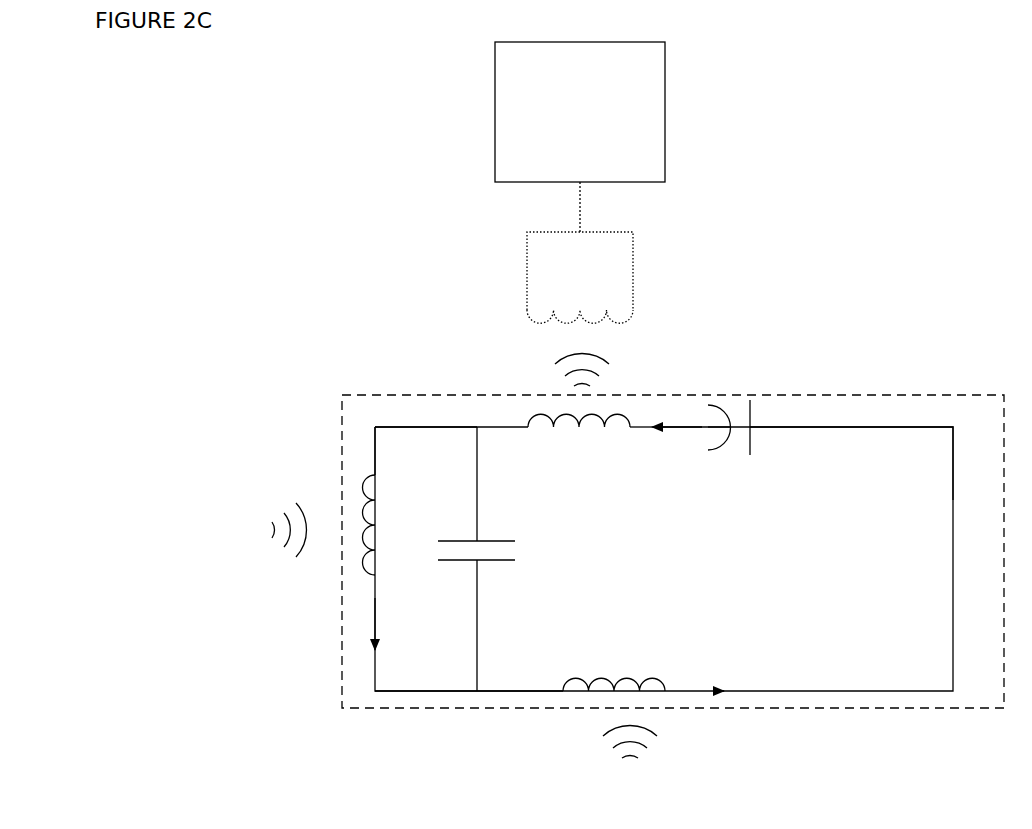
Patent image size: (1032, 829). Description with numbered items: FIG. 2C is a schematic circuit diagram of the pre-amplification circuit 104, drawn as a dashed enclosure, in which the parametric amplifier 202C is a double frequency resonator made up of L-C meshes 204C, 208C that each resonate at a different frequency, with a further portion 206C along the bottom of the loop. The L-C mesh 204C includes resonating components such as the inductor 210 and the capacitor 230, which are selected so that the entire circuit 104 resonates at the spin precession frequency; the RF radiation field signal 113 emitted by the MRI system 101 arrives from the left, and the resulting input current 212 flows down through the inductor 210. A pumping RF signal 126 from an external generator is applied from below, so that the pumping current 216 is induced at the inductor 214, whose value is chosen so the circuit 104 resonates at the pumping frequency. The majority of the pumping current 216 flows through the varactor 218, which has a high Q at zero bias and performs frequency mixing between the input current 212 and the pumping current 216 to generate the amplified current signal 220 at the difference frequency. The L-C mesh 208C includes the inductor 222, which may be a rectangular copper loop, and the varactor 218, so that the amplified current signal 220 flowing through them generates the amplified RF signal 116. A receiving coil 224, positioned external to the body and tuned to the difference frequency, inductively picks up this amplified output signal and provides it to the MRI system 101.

The MRI system 101 is at (615, 42).
The receiving coil 224 is at (633, 277).
The amplified RF signal 116 is at (608, 371).
The pre-amplification circuit 104 is at (918, 395).
The parametric amplifier 202C is at (852, 415).
The inductor 222 is at (530, 420).
The amplified current signal 220 is at (680, 430).
The varactor 218 is at (752, 398).
The L-C mesh 208C is at (686, 472).
The L-C mesh 204C is at (408, 464).
The inductor 210 is at (375, 525).
The input current 212 is at (378, 615).
The capacitor 230 is at (493, 562).
The inductor 214 is at (615, 684).
The pumping current 216 is at (697, 688).
The circuit portion 206C is at (563, 698).
The pumping RF signal 126 is at (630, 765).
The RF radiation field signal 113 is at (278, 540).